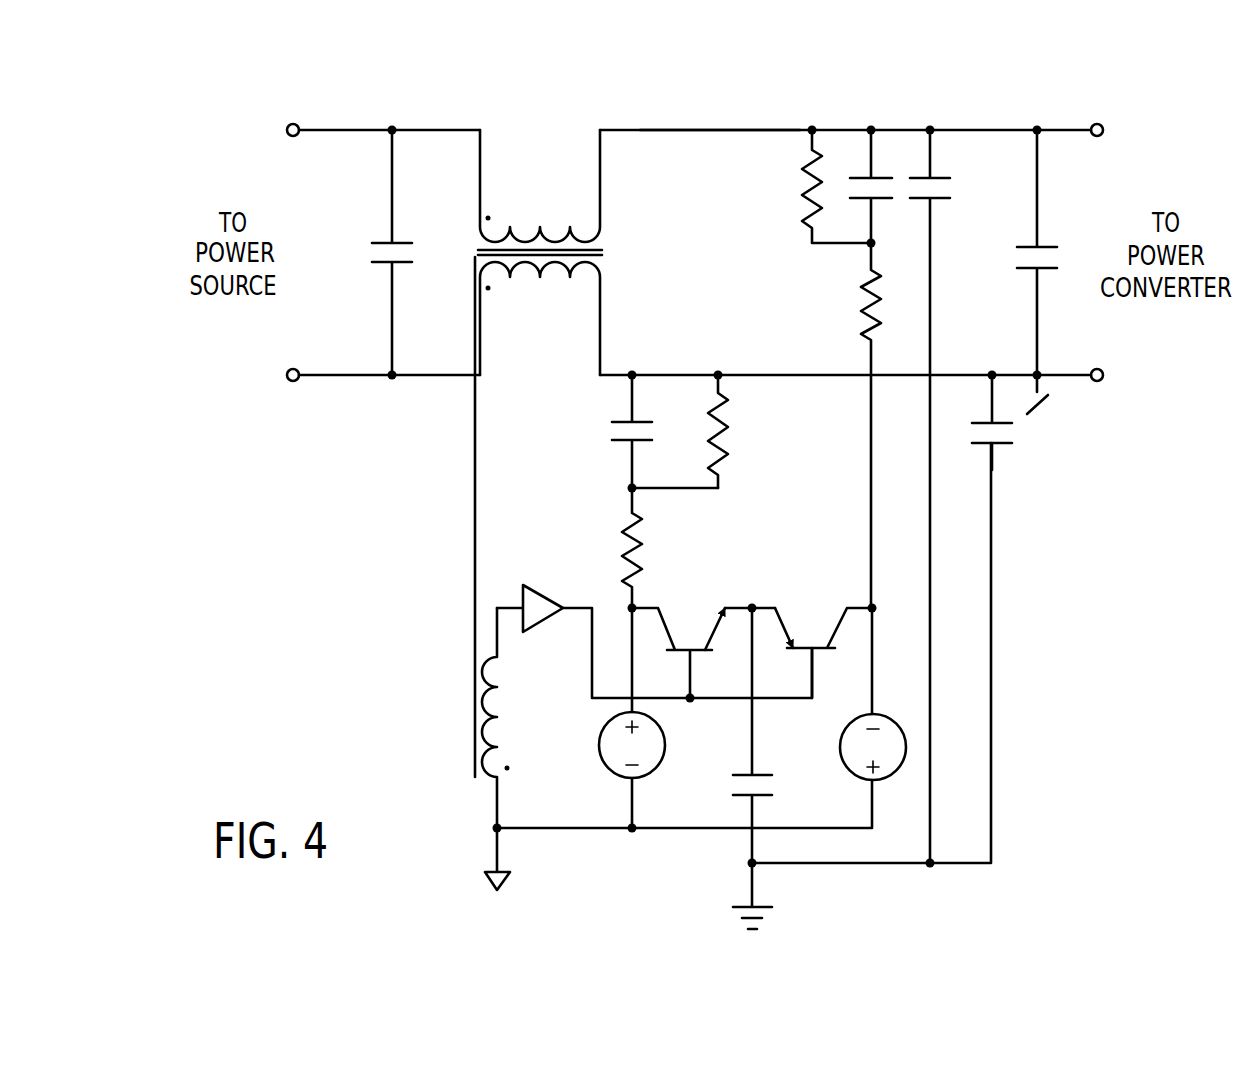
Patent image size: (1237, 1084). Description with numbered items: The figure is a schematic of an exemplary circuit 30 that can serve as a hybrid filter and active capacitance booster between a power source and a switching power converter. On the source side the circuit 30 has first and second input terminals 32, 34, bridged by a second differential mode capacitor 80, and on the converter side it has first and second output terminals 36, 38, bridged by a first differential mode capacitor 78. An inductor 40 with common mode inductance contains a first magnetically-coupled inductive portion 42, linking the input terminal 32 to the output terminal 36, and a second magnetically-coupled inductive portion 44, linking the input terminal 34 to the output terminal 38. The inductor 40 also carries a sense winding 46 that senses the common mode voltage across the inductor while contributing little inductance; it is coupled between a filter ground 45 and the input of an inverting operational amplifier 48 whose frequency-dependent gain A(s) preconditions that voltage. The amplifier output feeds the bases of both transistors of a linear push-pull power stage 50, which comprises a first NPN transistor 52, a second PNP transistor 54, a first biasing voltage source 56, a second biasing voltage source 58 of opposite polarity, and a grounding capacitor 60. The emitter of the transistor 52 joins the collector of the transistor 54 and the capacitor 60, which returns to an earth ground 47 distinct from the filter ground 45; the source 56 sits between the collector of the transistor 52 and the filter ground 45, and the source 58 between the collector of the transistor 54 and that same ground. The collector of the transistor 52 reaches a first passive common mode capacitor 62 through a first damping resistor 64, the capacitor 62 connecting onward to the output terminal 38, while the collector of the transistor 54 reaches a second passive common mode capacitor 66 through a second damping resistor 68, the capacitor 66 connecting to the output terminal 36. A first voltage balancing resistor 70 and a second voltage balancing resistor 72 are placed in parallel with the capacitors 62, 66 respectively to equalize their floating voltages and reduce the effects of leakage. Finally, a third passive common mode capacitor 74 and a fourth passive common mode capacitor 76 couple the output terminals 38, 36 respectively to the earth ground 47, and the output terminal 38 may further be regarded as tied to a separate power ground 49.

The circuit 30 is at (693, 105).
The first input terminal 32 is at (303, 112).
The second input terminal 34 is at (285, 387).
The first output terminal 36 is at (1110, 122).
The second output terminal 38 is at (1110, 385).
The inductor 40 is at (540, 244).
The first magnetically-coupled inductive portion 42 is at (550, 223).
The second magnetically-coupled inductive portion 44 is at (558, 273).
The filter ground 45 is at (507, 882).
The sense winding 46 is at (462, 722).
The earth ground 47 is at (748, 903).
The inverting operational amplifier 48 is at (548, 633).
The power ground 49 is at (1045, 413).
The linear push-pull power stage 50 is at (752, 614).
The first transistor 52 is at (688, 613).
The second transistor 54 is at (832, 658).
The first biasing voltage source 56 is at (672, 752).
The second biasing voltage source 58 is at (893, 710).
The grounding capacitor 60 is at (785, 793).
The first passive common mode capacitor 62 is at (602, 442).
The first damping resistor 64 is at (608, 545).
The second passive common mode capacitor 66 is at (880, 205).
The second damping resistor 68 is at (888, 313).
The first voltage balancing resistor 70 is at (737, 420).
The second voltage balancing resistor 72 is at (787, 212).
The third passive common mode capacitor 74 is at (1010, 450).
The fourth passive common mode capacitor 76 is at (947, 207).
The first differential mode capacitor 78 is at (1020, 275).
The second differential mode capacitor 80 is at (405, 275).